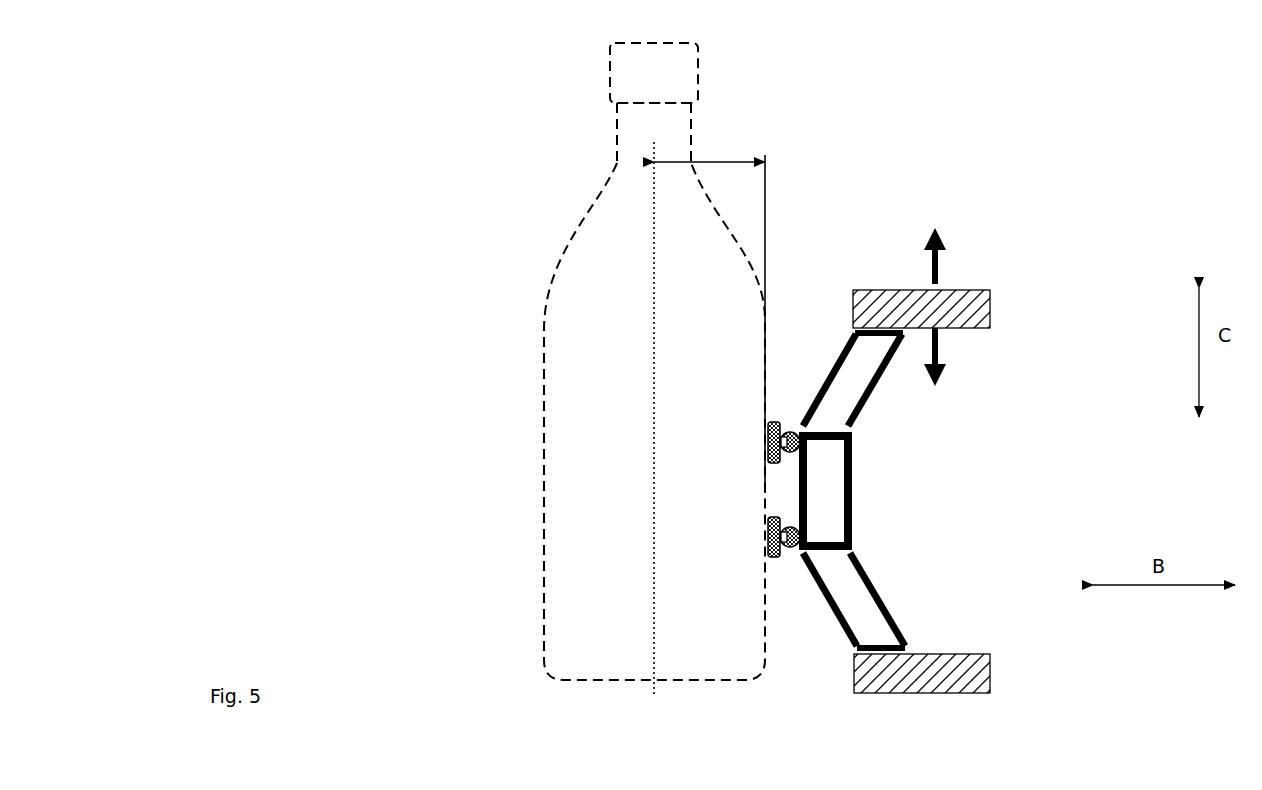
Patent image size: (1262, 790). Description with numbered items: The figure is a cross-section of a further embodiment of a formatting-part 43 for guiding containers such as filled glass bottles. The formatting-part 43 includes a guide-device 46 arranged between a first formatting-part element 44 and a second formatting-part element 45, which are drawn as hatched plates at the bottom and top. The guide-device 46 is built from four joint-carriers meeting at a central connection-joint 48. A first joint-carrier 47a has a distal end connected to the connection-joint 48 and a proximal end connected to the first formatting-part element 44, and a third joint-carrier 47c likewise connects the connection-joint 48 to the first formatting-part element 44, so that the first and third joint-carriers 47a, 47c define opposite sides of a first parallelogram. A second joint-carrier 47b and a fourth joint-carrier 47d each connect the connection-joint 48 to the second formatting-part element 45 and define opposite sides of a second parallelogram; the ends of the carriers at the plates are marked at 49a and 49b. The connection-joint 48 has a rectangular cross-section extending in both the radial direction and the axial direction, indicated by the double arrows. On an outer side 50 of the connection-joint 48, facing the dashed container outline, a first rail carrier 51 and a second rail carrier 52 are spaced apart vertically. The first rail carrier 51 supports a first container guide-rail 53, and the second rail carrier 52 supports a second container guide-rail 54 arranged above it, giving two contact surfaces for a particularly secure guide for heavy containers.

The formatting-part 43 is at (873, 112).
The first formatting-part element 44 is at (960, 683).
The second formatting-part element 45 is at (985, 298).
The guide-device 46 is at (995, 458).
The first joint-carrier 47a is at (825, 603).
The second joint-carrier 47b is at (837, 353).
The third joint-carrier 47c is at (878, 592).
The fourth joint-carrier 47d is at (883, 380).
The connection-joint 48 is at (855, 487).
The upper pivot point 49a is at (853, 318).
The lower pivot point 49b is at (855, 673).
The outer side 50 is at (778, 493).
The first rail carrier 51 is at (785, 557).
The second rail carrier 52 is at (784, 422).
The first container guide-rail 53 is at (768, 540).
The second container guide-rail 54 is at (768, 437).